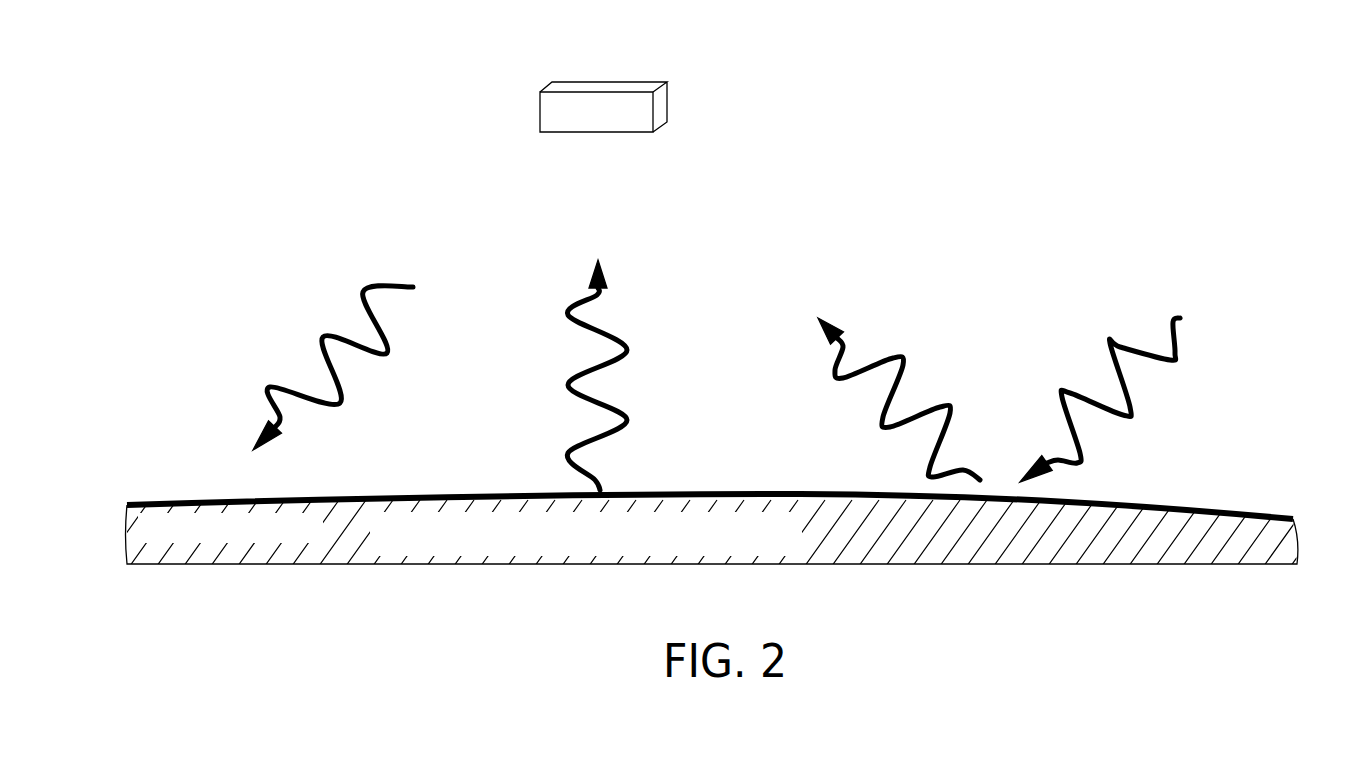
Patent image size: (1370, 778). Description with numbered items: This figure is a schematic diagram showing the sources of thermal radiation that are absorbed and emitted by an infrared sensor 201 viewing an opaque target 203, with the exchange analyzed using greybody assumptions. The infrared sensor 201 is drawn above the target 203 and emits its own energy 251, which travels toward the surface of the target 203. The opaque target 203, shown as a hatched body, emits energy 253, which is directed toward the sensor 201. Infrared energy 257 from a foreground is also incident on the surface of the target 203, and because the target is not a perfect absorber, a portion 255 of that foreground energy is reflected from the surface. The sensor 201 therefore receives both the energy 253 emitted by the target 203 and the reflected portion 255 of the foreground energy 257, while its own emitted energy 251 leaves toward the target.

The infrared sensor 201 is at (615, 83).
The opaque target 203 is at (1261, 507).
The energy emitted by the IR sensor 251 is at (313, 340).
The energy emitted by the target 253 is at (565, 387).
The reflected portion of the foreground energy 255 is at (882, 426).
The infrared energy from a foreground 257 is at (1105, 353).